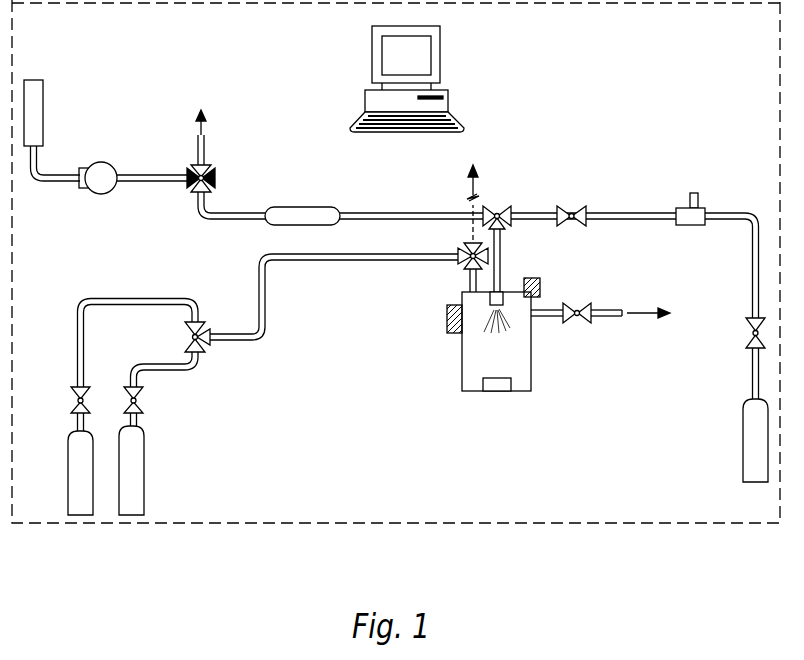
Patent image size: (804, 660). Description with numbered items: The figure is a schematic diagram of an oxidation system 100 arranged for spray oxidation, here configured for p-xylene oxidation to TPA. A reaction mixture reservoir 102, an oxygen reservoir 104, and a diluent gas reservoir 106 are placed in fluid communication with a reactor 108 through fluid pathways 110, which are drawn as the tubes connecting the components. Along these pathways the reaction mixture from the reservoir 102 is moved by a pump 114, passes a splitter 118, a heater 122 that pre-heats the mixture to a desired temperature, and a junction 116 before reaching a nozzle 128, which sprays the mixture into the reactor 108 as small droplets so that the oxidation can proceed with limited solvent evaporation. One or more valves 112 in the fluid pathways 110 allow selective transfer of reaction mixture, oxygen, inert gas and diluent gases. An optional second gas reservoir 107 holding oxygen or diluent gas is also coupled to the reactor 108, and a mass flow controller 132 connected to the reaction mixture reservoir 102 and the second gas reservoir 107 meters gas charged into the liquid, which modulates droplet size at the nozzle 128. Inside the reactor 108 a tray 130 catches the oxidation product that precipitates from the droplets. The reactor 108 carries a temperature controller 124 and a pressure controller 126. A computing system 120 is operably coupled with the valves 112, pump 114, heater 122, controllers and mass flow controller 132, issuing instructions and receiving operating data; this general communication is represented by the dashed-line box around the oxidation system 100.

The oxidation system 100 is at (162, 54).
The reaction mixture reservoir 102 is at (46, 88).
The oxygen reservoir 104 is at (67, 480).
The diluent gas reservoir 106 is at (145, 482).
The second gas reservoir 107 is at (743, 446).
The reactor 108 is at (461, 362).
The fluid pathways 110 is at (265, 304).
The valves 112 is at (575, 206).
The pump 114 is at (111, 166).
The junction 116 is at (203, 344).
The splitter 118 is at (210, 178).
The computing system 120 is at (440, 50).
The heater 122 is at (319, 207).
The temperature controller 124 is at (447, 318).
The pressure controller 126 is at (538, 278).
The nozzle 128 is at (505, 300).
The tray 130 is at (499, 392).
The mass flow controller 132 is at (700, 190).